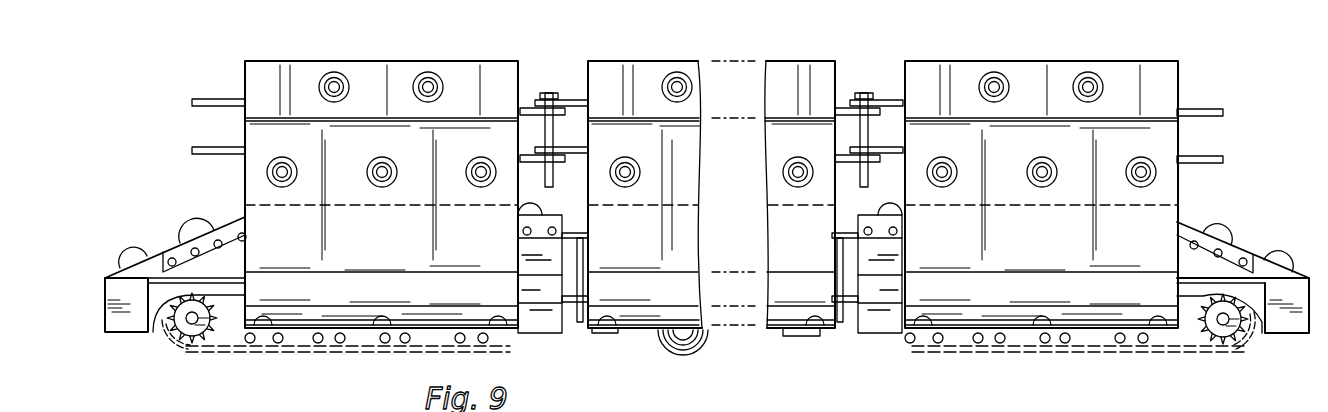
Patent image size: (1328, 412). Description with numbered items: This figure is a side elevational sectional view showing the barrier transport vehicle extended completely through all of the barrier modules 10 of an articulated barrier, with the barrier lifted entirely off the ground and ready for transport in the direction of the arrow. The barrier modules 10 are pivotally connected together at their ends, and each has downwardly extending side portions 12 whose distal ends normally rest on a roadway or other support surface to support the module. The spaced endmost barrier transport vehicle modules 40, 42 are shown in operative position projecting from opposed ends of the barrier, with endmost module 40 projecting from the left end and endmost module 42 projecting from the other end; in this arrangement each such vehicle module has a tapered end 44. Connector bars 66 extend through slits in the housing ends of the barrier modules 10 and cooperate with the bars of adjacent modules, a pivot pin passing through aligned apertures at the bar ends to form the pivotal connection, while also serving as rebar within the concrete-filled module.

The barrier module 10 is at (496, 84).
The side portion 12 is at (355, 295).
The endmost barrier transport vehicle module 40 is at (128, 322).
The endmost barrier transport vehicle module 42 is at (1282, 312).
The tapered end 44 is at (162, 243).
The connector bar 66 is at (202, 99).